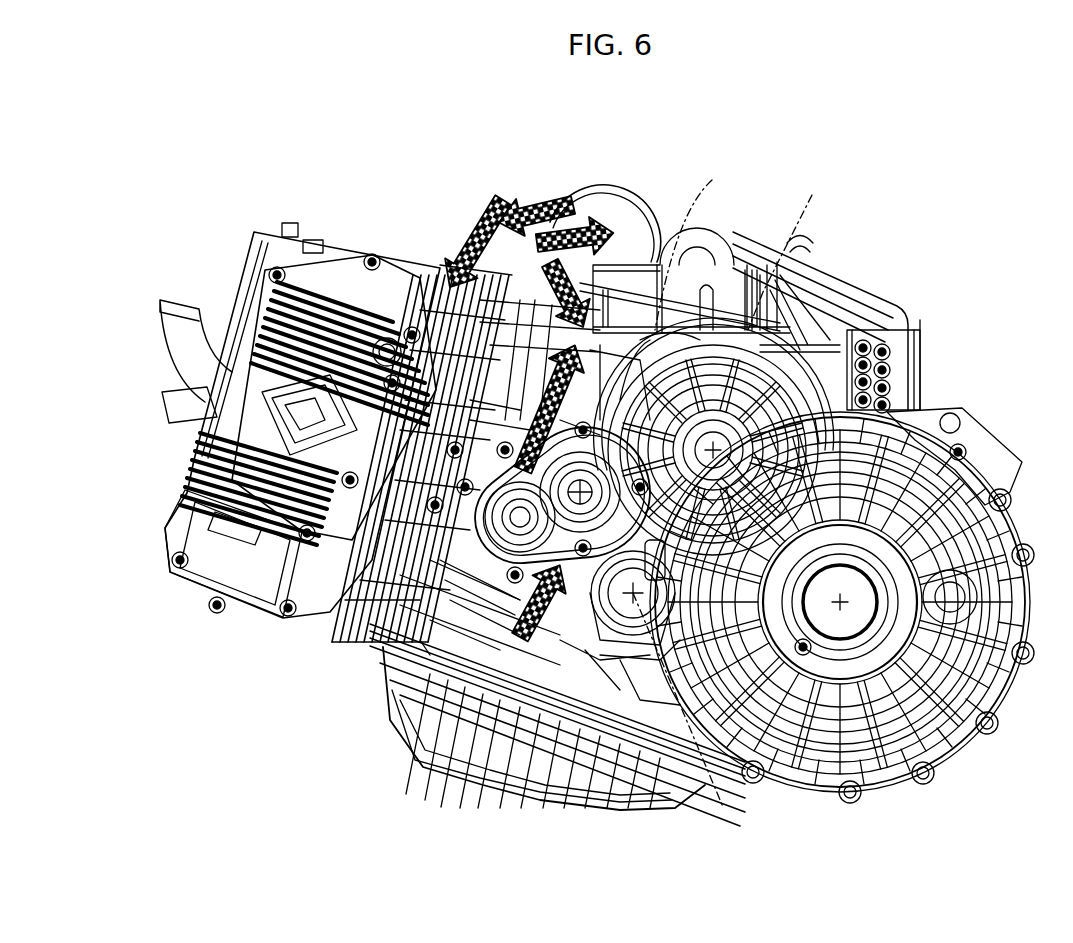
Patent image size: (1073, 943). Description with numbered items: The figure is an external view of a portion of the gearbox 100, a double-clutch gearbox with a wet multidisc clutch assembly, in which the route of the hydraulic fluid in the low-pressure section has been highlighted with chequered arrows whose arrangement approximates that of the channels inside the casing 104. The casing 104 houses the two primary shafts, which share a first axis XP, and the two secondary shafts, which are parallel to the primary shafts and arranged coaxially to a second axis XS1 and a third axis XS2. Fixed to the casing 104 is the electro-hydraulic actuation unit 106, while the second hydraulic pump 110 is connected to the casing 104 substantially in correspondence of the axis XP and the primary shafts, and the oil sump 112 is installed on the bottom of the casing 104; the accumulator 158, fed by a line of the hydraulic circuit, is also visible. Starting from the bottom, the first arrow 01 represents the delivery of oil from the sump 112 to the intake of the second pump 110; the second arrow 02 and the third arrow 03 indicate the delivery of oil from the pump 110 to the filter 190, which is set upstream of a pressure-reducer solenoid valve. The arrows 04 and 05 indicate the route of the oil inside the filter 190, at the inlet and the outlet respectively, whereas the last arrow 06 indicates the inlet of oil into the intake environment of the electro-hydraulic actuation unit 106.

The gearbox 100 is at (1044, 270).
The second casing 104 is at (858, 288).
The electro-hydraulic actuation unit 106 is at (398, 284).
The accumulator 158 is at (250, 260).
The second hydraulic pump 110 is at (380, 640).
The first arrow 01 is at (530, 600).
The oil sump 112 is at (427, 770).
The second arrow 02 is at (512, 206).
The third arrow 03 is at (648, 335).
The arrow 04 is at (588, 282).
The arrow 05 is at (543, 238).
The last arrow 06 is at (462, 232).
The filter 190 is at (604, 184).
The first axis XP is at (712, 180).
The second axis XS1 is at (812, 195).
The third axis XS2 is at (723, 807).